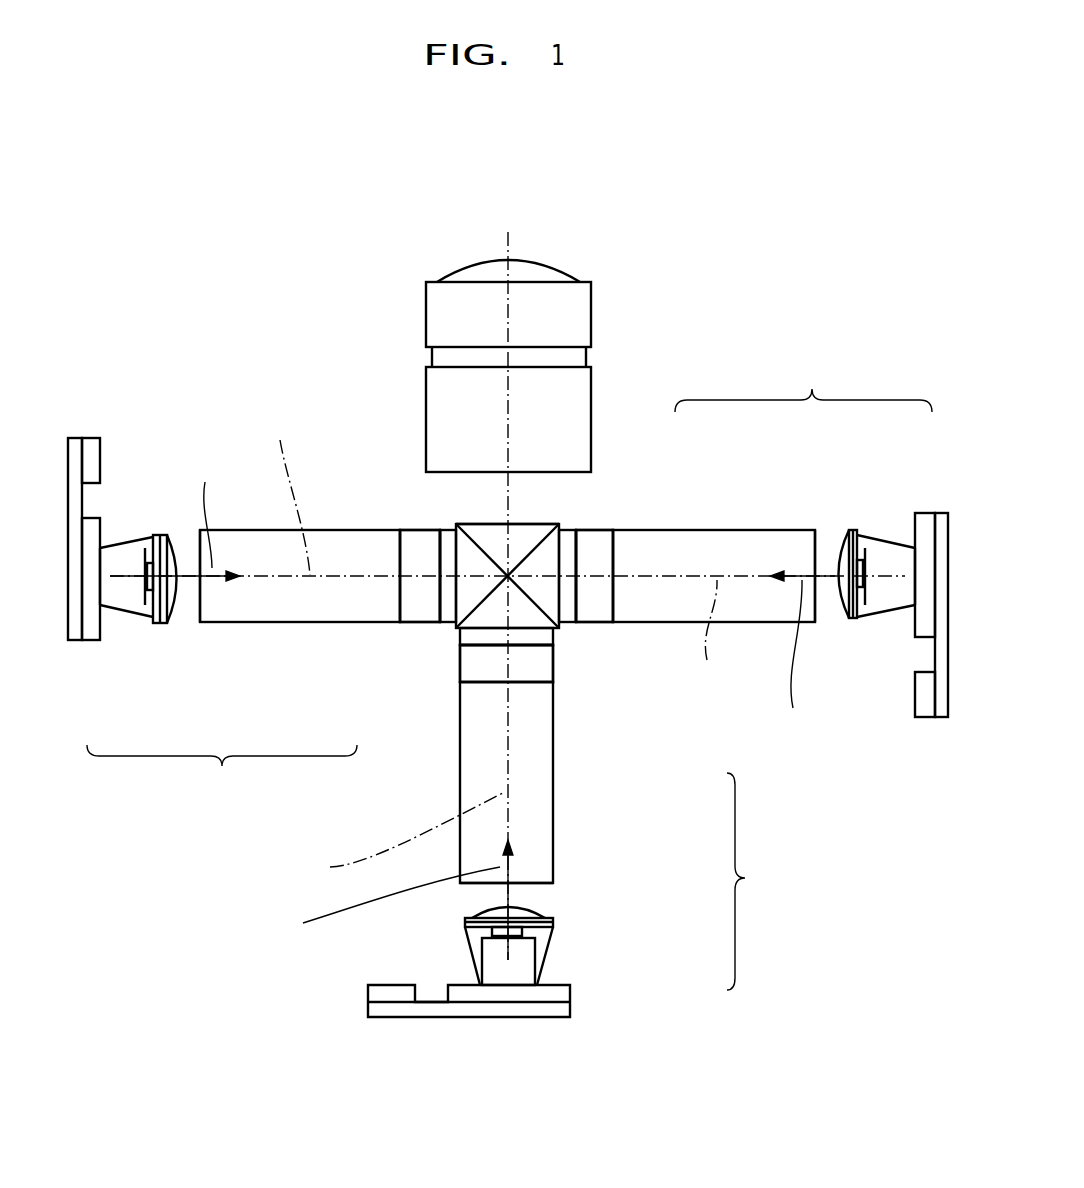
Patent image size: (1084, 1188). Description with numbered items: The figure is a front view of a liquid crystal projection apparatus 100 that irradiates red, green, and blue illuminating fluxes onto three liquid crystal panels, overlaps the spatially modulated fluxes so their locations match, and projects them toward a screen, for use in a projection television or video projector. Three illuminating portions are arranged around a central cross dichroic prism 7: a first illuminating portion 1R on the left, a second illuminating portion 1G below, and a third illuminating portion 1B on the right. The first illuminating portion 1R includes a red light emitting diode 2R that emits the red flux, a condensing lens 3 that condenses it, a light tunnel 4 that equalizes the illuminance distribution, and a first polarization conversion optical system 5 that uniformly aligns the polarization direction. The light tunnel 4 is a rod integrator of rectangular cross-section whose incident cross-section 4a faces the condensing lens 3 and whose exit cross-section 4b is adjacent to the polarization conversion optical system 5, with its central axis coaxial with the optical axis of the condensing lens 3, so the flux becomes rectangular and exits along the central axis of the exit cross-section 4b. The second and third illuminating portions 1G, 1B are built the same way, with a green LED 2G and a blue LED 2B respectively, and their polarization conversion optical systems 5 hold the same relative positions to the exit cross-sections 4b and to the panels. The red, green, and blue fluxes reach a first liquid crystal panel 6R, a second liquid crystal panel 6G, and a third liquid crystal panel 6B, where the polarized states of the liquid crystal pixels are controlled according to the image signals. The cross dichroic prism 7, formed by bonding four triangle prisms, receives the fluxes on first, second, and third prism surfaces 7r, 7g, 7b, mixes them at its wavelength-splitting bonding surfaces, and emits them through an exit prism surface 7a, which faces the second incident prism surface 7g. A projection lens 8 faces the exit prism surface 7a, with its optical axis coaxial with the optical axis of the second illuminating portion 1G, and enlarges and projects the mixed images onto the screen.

The liquid crystal projection apparatus 100 is at (790, 255).
The projection lens 8 is at (605, 337).
The cross dichroic prism 7 is at (473, 524).
The exit prism surface 7a is at (523, 525).
The first prism surface 7r is at (438, 545).
The third prism surface 7b is at (563, 548).
The second incident prism surface 7g is at (535, 633).
The first liquid crystal panel 6R is at (435, 628).
The third liquid crystal panel 6B is at (570, 530).
The second liquid crystal panel 6G is at (555, 643).
The first polarization conversion optical system 5 is at (405, 618).
The light tunnel 4 is at (247, 622).
The incident cross-section 4a is at (197, 540).
The exit cross-section 4b is at (402, 552).
The condensing lens 3 is at (173, 600).
The red light emitting diode 2R is at (113, 638).
The blue LED 2B is at (898, 504).
The green LED 2G is at (580, 972).
The first illuminating portion 1R is at (239, 805).
The third illuminating portion 1B is at (826, 383).
The second illuminating portion 1G is at (786, 894).